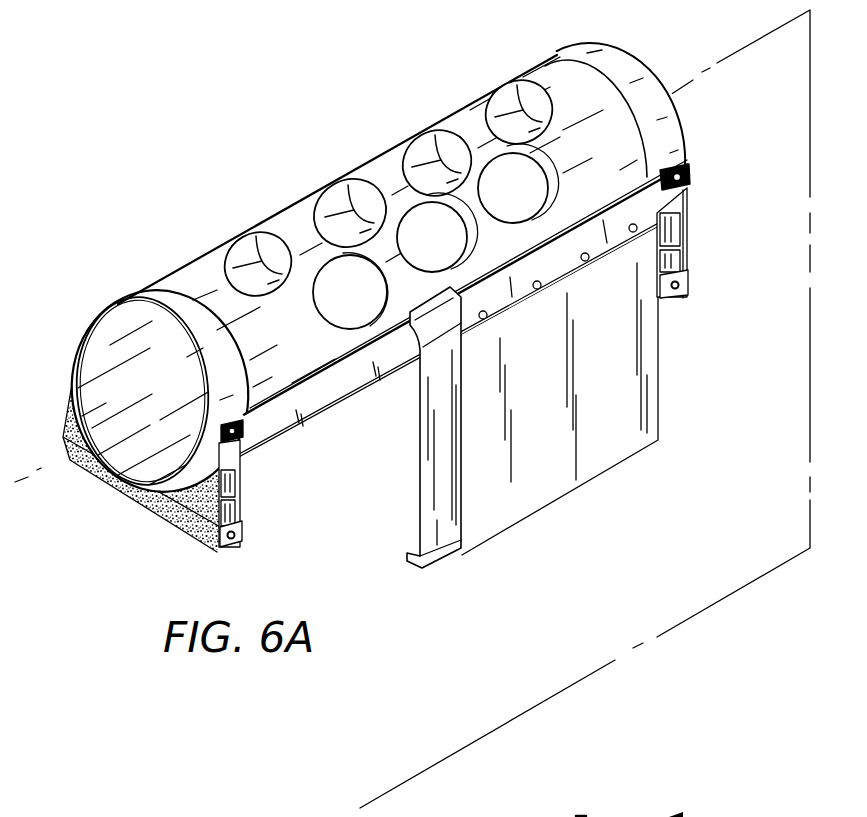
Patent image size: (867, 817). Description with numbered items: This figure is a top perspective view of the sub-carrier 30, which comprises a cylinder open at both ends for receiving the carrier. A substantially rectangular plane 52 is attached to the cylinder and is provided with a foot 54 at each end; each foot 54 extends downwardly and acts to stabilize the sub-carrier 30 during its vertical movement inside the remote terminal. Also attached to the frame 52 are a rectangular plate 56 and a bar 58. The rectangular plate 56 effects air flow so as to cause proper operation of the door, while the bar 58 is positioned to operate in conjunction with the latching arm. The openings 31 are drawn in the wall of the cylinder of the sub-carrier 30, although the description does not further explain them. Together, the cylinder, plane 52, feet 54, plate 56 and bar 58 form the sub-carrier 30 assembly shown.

The sub-carrier 30 is at (502, 50).
The holes in tube 31 is at (330, 186).
The rectangular plane 52 is at (336, 410).
The foot 54 is at (241, 543).
The rectangular plate 56 is at (556, 423).
The bar 58 is at (418, 520).